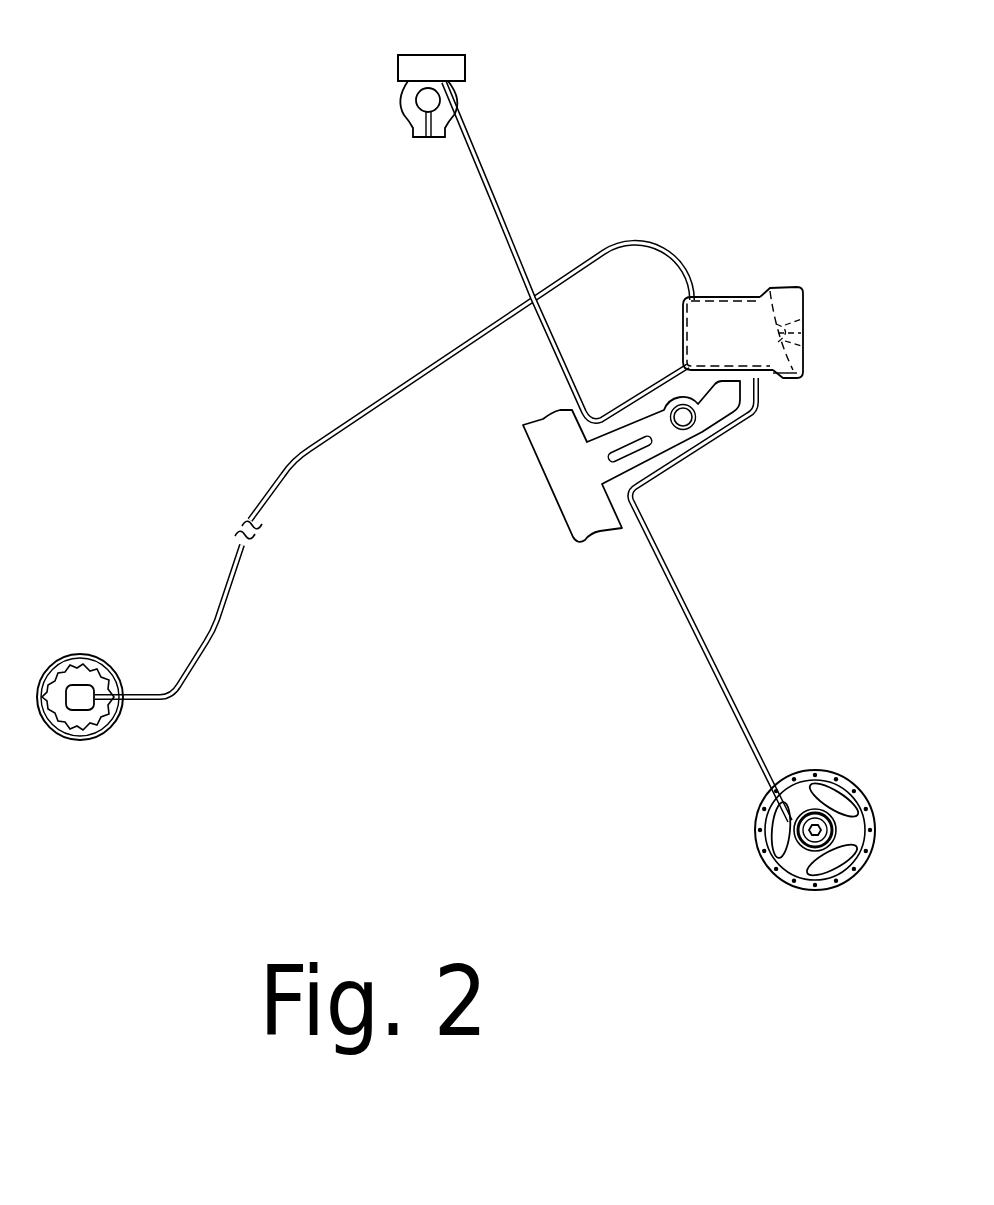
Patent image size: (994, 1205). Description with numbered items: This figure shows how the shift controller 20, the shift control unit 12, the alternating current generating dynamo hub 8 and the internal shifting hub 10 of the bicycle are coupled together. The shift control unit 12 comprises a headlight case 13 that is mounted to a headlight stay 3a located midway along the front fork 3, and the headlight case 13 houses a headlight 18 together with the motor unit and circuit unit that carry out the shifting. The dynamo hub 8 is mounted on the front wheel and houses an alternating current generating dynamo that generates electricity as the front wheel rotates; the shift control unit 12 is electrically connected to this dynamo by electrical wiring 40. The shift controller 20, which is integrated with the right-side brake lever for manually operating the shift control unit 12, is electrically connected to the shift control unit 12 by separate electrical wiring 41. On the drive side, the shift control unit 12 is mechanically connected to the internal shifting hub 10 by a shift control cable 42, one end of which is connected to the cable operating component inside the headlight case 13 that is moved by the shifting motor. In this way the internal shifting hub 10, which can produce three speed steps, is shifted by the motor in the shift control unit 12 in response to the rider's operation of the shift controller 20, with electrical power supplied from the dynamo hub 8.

The front fork 3 is at (565, 512).
The headlight stay 3a is at (611, 471).
The dynamo hub 8 is at (823, 777).
The internal shifting hub 10 is at (110, 727).
The shift control unit 12 is at (708, 297).
The headlight case 13 is at (733, 308).
The headlight 18 is at (803, 304).
The shift controller 20 is at (455, 73).
The electrical wiring 40 is at (703, 643).
The electrical wiring 41 is at (498, 186).
The shift control cable 42 is at (438, 358).